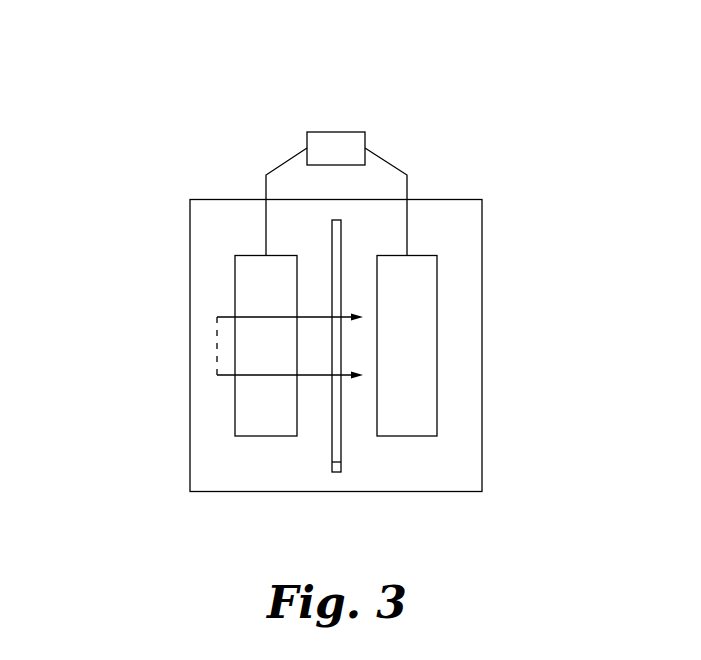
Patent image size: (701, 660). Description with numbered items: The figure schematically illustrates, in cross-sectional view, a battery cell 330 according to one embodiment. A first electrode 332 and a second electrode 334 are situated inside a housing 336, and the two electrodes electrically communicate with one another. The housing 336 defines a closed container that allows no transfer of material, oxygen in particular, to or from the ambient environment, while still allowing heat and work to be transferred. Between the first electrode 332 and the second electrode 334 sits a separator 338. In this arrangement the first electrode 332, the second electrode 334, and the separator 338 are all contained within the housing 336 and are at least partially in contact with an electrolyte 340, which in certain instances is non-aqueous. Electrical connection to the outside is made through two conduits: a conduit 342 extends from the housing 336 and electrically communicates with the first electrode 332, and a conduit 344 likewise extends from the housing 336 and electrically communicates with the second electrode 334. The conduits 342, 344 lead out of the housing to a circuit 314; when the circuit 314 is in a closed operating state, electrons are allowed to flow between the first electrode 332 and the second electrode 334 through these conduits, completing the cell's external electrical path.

The circuit 314 is at (335, 132).
The battery cell 330 is at (169, 507).
The first electrode 332 is at (254, 283).
The second electrode 334 is at (417, 283).
The housing 336 is at (473, 473).
The separator 338 is at (337, 472).
The electrolyte 340 is at (263, 467).
The conduit 342 is at (288, 158).
The conduit 344 is at (387, 158).